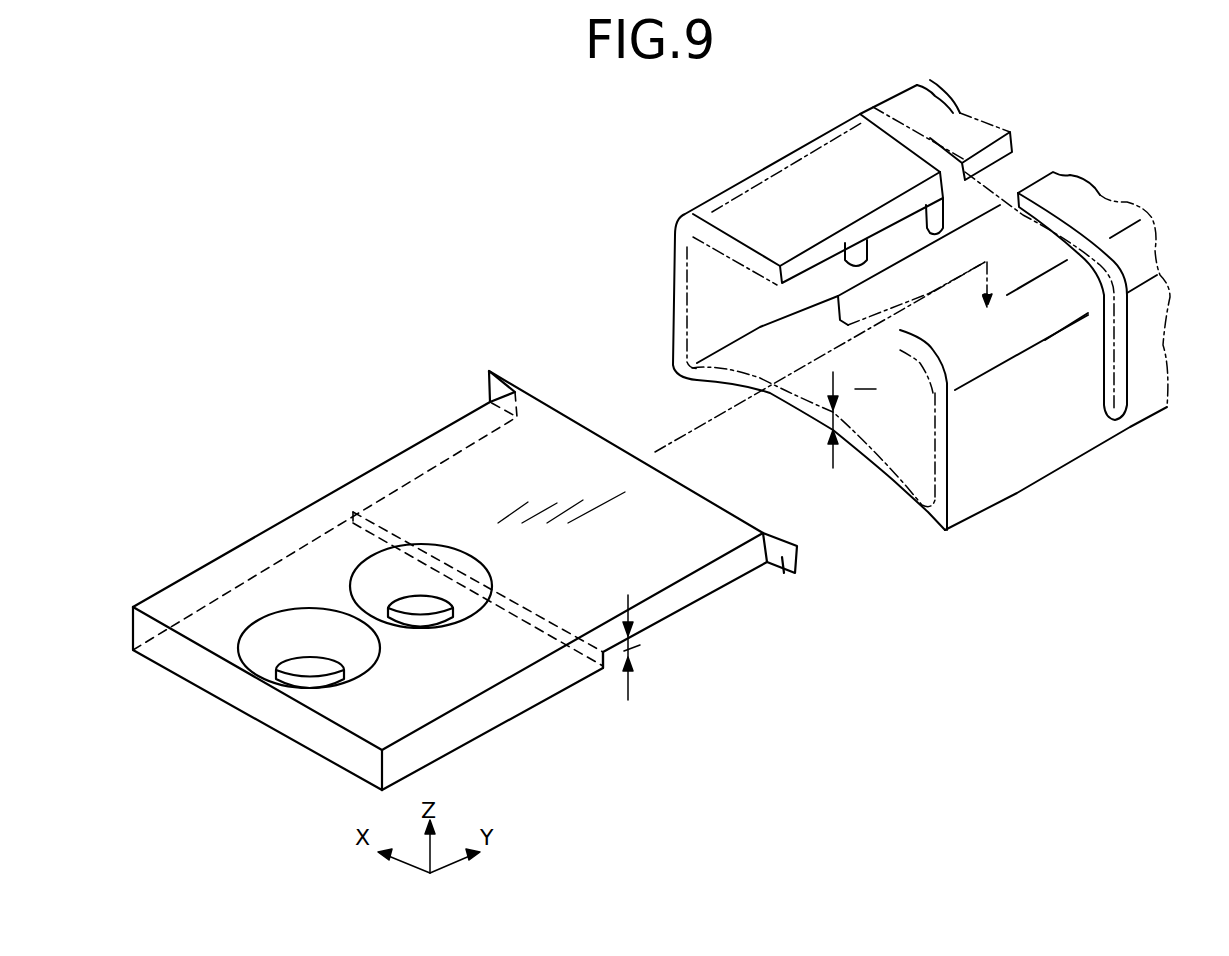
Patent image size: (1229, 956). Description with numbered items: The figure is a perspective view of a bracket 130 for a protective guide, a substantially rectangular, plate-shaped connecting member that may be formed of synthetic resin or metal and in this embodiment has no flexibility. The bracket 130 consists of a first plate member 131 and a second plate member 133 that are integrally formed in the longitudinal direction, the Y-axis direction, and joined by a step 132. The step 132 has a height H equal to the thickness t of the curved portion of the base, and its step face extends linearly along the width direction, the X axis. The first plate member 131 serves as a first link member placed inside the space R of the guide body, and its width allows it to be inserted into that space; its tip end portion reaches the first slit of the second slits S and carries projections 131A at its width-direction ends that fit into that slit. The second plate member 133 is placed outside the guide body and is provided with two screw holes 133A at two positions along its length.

The bracket 130 is at (776, 668).
The first plate member 131 is at (637, 571).
The projections 131A is at (490, 387).
The step 132 is at (604, 664).
The second plate member 133 is at (445, 685).
The screw holes 133A is at (285, 630).
The second slits S is at (857, 258).